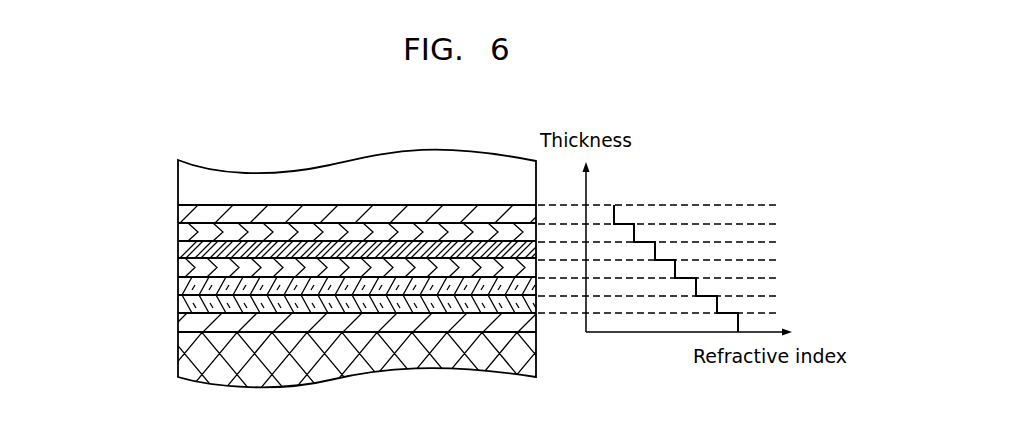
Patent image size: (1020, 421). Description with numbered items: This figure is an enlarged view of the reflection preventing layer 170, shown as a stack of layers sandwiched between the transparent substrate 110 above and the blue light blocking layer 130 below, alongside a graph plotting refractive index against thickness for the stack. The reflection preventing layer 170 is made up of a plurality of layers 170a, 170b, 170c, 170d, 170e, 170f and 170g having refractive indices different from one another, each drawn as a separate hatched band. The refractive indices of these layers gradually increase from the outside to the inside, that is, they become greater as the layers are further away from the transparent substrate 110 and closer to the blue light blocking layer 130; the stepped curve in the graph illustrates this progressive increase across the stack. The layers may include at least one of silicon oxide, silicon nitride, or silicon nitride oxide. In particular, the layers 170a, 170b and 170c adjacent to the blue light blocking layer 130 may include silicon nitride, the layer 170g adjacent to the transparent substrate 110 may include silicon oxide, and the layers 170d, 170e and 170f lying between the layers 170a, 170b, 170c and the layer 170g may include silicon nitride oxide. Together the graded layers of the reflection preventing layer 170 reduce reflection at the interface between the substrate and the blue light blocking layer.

The transparent substrate 110 is at (195, 182).
The blue light blocking layer 130 is at (195, 356).
The reflection preventing layer 170 is at (104, 206).
The layer 170a is at (183, 327).
The layer 170b is at (183, 308).
The layer 170c is at (183, 289).
The layer 170d is at (183, 269).
The layer 170e is at (183, 249).
The layer 170f is at (183, 230).
The layer 170g is at (183, 211).